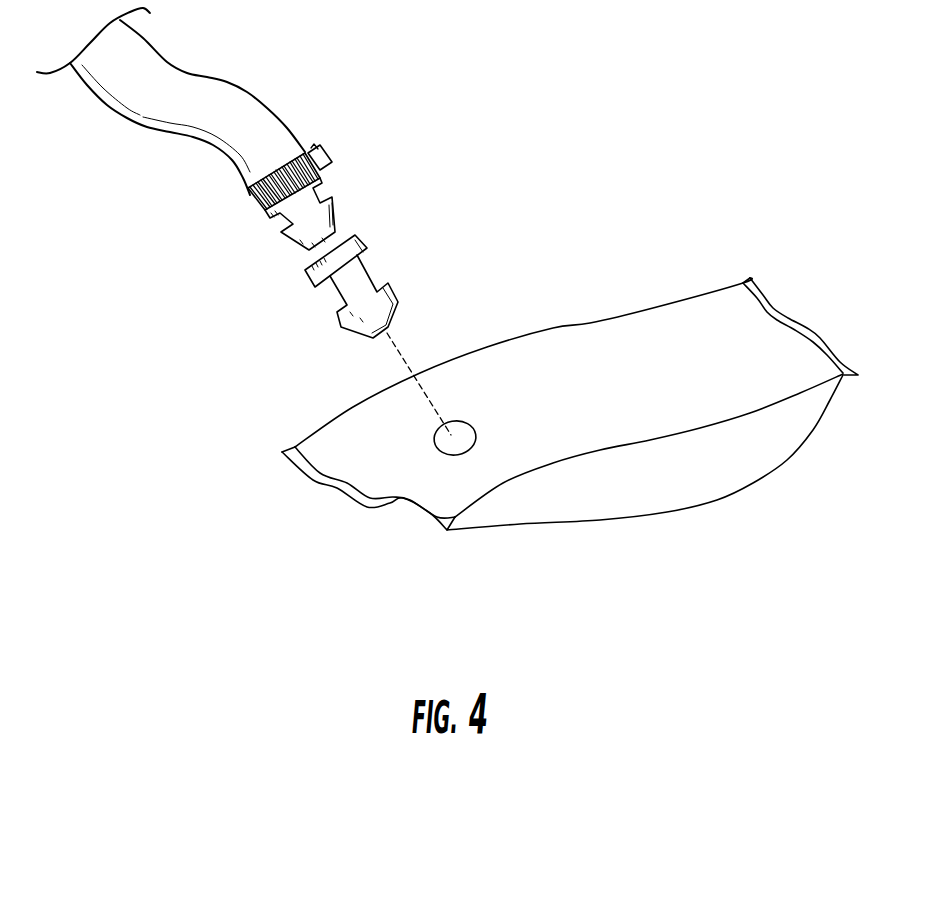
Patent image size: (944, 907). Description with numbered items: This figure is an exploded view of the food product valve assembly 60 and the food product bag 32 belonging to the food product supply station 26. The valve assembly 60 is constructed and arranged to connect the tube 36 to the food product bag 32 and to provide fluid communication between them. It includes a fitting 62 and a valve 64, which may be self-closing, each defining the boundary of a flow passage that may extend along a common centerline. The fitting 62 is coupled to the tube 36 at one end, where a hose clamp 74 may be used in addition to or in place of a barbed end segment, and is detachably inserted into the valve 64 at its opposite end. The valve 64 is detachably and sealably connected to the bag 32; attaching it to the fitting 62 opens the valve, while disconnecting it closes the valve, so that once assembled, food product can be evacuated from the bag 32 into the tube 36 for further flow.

The engine assembly 26 is at (724, 103).
The food product bag 32 is at (653, 309).
The tube 36 is at (222, 79).
The food product valve assembly 60 is at (337, 158).
The fitting 62 is at (283, 228).
The valve 64 is at (338, 317).
The hose clamp 74 is at (329, 152).